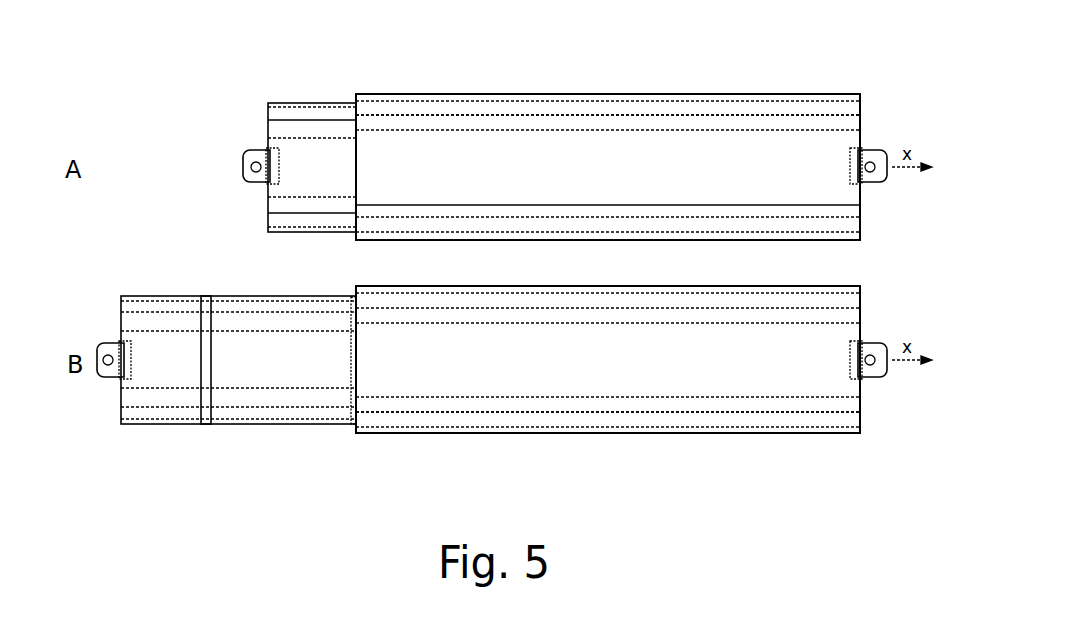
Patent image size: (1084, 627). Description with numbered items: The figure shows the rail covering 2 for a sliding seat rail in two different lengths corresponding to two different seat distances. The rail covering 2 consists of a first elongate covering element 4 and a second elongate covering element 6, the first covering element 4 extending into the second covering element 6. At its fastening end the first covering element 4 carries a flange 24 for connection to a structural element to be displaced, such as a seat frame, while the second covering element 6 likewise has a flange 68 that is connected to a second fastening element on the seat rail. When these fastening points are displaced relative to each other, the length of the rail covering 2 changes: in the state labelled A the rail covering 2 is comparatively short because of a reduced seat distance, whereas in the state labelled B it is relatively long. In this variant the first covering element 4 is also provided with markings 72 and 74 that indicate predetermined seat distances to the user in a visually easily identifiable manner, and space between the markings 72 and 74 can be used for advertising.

The rail covering 2 is at (566, 78).
The first elongate covering element 4 is at (296, 131).
The second elongate covering element 6 is at (710, 149).
The flange 24 is at (250, 150).
The flange 68 is at (874, 152).
The marking 72 is at (205, 424).
The marking 74 is at (353, 421).